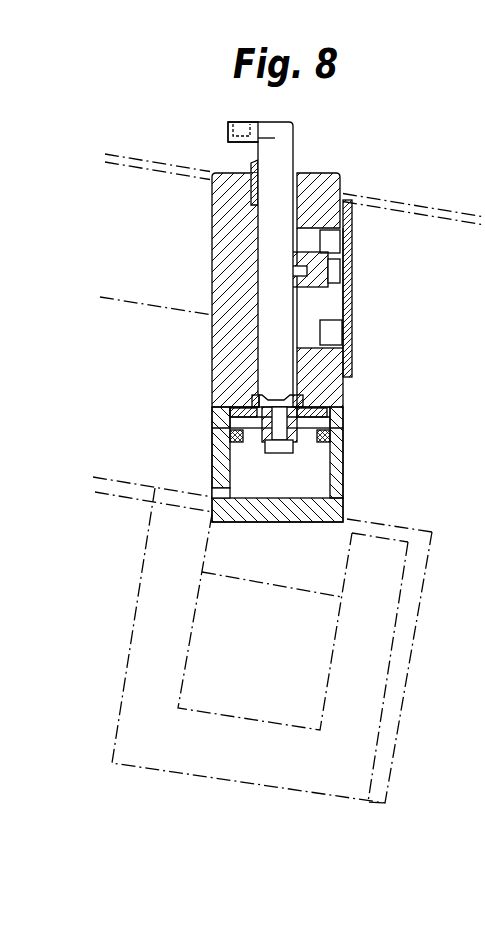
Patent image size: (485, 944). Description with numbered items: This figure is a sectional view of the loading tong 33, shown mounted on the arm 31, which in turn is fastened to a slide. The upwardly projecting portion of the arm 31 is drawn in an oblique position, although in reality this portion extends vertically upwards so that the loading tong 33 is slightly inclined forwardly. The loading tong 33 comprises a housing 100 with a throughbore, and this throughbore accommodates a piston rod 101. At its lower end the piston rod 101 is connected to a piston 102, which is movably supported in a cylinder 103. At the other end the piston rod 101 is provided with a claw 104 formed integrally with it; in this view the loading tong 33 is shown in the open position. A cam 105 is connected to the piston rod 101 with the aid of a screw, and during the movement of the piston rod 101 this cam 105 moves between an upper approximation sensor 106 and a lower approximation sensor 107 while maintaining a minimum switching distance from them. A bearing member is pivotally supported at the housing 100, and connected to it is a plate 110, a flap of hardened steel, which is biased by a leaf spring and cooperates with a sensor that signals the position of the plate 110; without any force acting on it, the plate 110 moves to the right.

The arm 31 is at (400, 686).
The loading tong 33 is at (313, 163).
The housing 100 is at (337, 178).
The piston rod 101 is at (272, 332).
The piston 102 is at (252, 447).
The cylinder 103 is at (345, 476).
The claw 104 is at (228, 122).
The cam 105 is at (322, 287).
The upper approximation sensor 106 is at (333, 243).
The lower approximation sensor 107 is at (335, 337).
The plate 110 is at (252, 158).